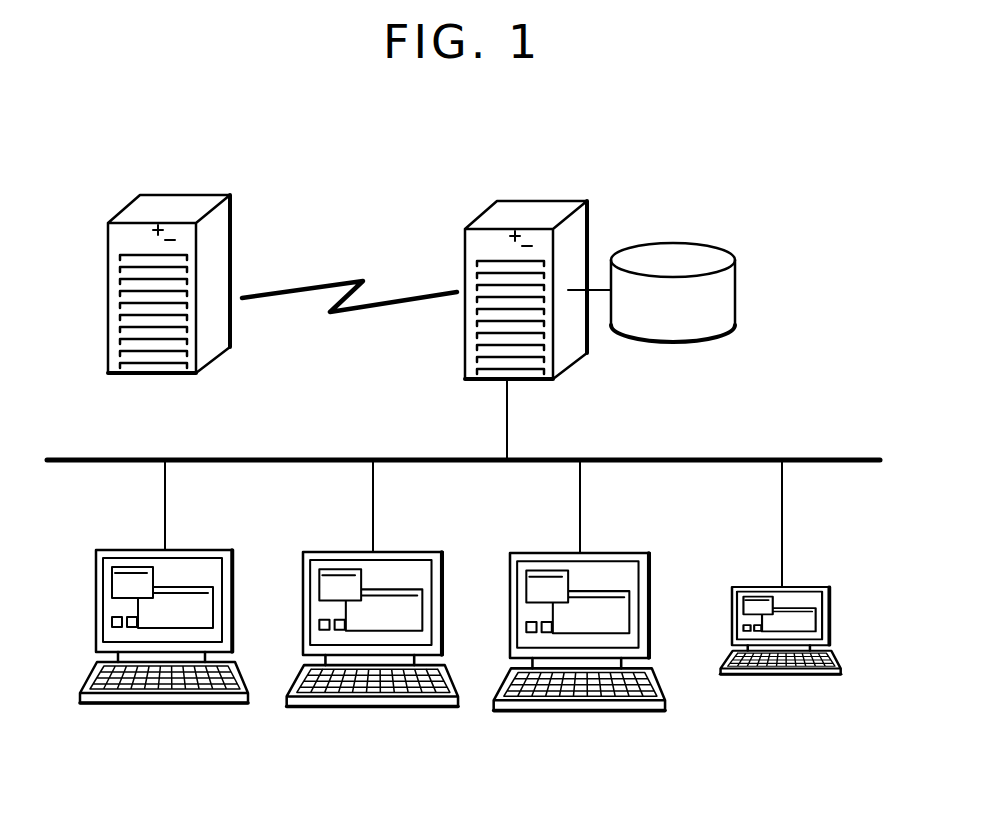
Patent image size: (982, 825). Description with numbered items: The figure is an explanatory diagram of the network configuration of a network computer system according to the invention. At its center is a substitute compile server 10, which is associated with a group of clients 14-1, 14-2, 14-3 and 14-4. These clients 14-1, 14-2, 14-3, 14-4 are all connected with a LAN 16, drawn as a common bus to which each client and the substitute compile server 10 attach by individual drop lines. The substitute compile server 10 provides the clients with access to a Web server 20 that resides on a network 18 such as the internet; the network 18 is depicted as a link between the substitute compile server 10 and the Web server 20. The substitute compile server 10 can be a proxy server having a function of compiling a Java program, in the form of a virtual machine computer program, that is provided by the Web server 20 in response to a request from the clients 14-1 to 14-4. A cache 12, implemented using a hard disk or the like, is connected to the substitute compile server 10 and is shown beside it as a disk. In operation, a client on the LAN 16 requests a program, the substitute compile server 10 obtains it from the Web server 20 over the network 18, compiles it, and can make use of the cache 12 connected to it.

The substitute compile server 10 is at (534, 199).
The cache 12 is at (683, 243).
The client 14-1 is at (167, 704).
The client 14-2 is at (376, 708).
The client 14-3 is at (586, 712).
The client 14-4 is at (784, 674).
The LAN 16 is at (708, 459).
The network 18 is at (336, 277).
The Web server 20 is at (178, 195).